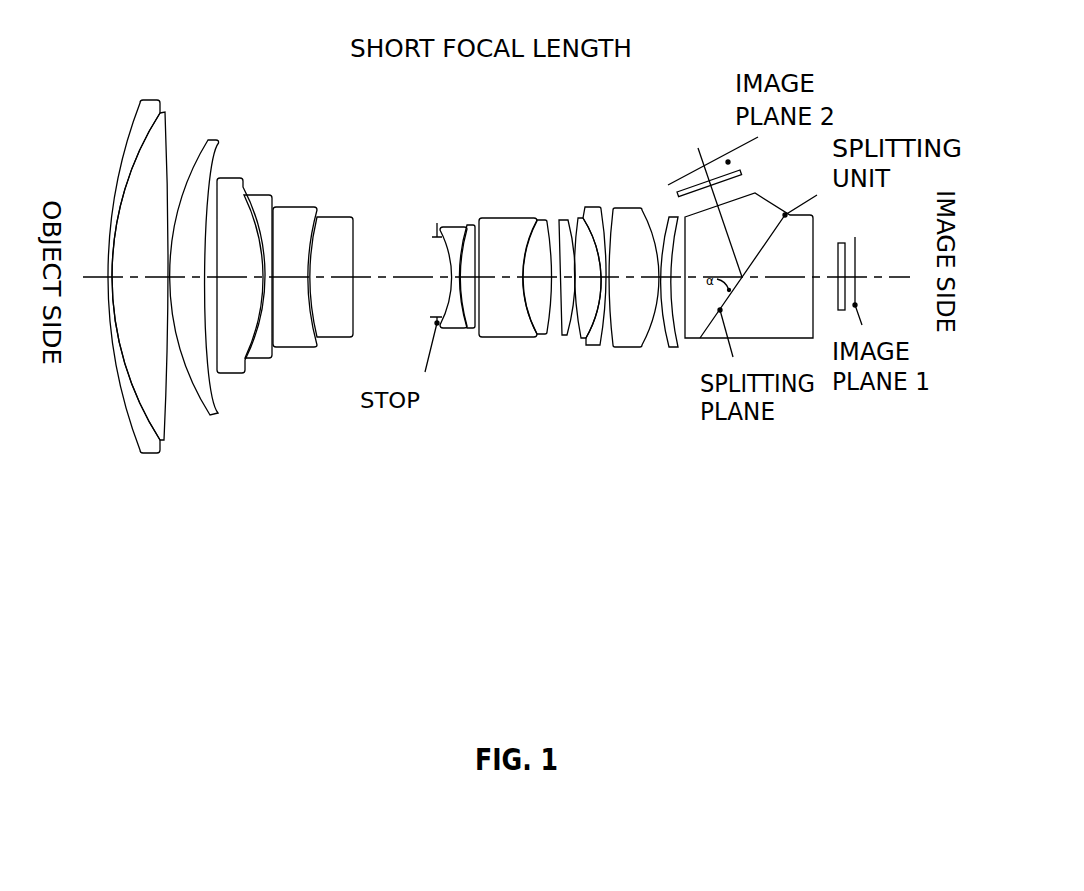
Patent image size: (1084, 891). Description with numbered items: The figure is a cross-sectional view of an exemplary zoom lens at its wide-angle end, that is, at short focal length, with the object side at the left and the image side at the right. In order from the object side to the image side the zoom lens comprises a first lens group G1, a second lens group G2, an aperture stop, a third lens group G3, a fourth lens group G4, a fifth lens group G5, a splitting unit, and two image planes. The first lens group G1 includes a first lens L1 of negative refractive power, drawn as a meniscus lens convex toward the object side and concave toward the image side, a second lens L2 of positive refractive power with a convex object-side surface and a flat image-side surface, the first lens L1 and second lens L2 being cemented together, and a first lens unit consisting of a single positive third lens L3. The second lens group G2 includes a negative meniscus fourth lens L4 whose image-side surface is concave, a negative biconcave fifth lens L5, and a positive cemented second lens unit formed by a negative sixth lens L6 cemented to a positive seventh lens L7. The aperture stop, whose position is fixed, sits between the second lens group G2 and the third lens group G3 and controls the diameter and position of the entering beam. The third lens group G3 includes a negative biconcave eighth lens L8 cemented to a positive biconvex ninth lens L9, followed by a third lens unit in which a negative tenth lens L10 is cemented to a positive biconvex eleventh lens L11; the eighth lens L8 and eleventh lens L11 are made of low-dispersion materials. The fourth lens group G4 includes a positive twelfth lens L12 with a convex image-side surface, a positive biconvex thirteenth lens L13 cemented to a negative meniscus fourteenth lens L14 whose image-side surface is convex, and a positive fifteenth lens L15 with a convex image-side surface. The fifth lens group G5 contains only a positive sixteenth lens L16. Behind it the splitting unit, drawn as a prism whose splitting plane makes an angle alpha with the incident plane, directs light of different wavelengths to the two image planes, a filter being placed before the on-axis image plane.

The first lens L1 is at (141, 130).
The second lens L2 is at (157, 137).
The third lens L3 is at (205, 175).
The fourth lens L4 is at (228, 193).
The fifth lens L5 is at (260, 205).
The sixth lens L6 is at (295, 222).
The seventh lens L7 is at (335, 232).
The eighth lens L8 is at (455, 230).
The ninth lens L9 is at (470, 235).
The tenth lens L10 is at (505, 235).
The eleventh lens L11 is at (537, 237).
The twelfth lens L12 is at (563, 228).
The thirteenth lens L13 is at (583, 240).
The fourteenth lens L14 is at (593, 220).
The fifteenth lens L15 is at (630, 220).
The sixteenth lens L16 is at (673, 220).
The first lens group G1 is at (163, 279).
The second lens group G2 is at (291, 302).
The third lens group G3 is at (471, 287).
The fourth lens group G4 is at (582, 287).
The fifth lens group G5 is at (661, 286).